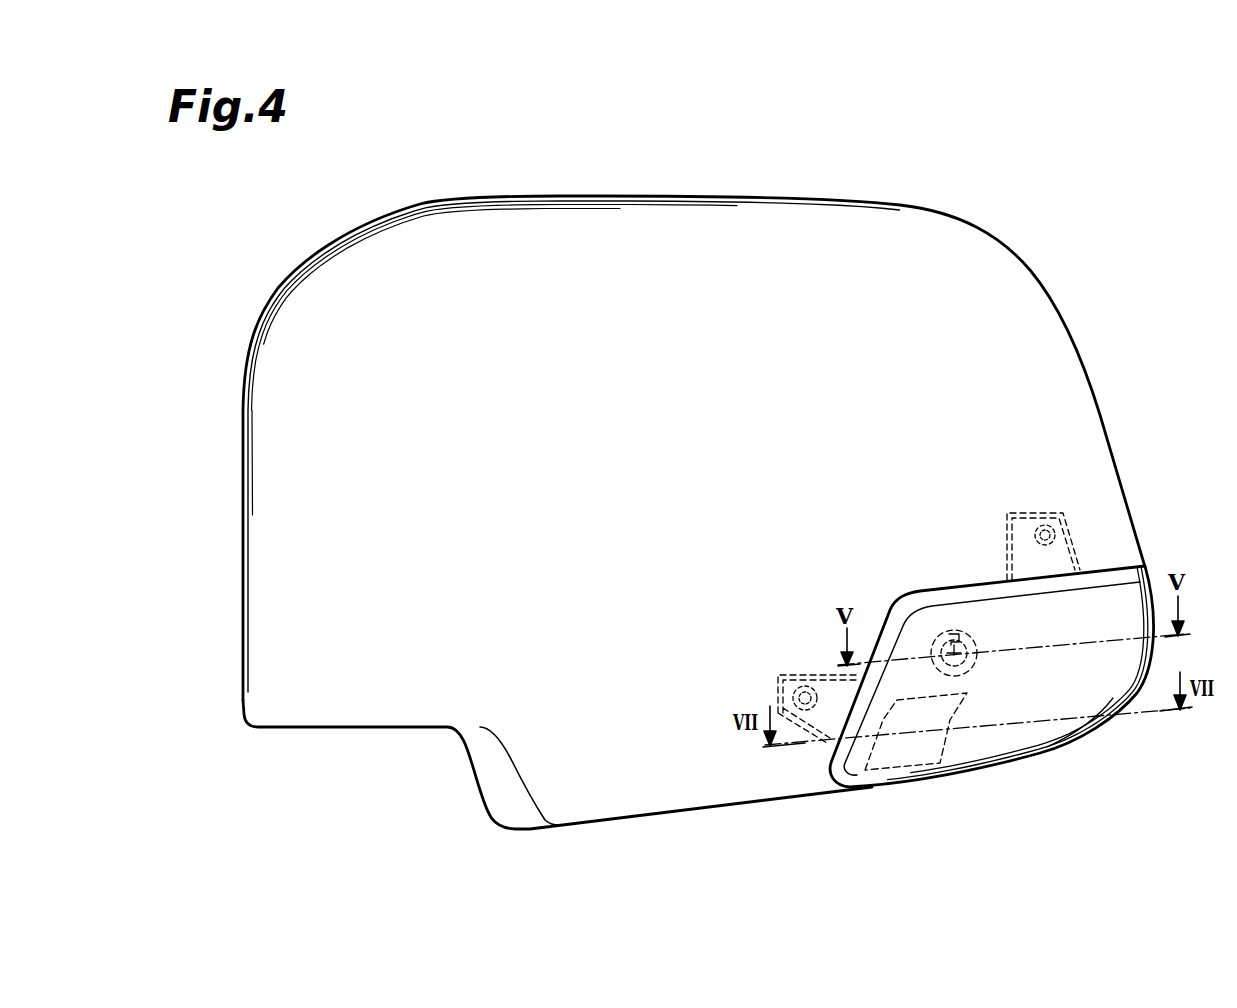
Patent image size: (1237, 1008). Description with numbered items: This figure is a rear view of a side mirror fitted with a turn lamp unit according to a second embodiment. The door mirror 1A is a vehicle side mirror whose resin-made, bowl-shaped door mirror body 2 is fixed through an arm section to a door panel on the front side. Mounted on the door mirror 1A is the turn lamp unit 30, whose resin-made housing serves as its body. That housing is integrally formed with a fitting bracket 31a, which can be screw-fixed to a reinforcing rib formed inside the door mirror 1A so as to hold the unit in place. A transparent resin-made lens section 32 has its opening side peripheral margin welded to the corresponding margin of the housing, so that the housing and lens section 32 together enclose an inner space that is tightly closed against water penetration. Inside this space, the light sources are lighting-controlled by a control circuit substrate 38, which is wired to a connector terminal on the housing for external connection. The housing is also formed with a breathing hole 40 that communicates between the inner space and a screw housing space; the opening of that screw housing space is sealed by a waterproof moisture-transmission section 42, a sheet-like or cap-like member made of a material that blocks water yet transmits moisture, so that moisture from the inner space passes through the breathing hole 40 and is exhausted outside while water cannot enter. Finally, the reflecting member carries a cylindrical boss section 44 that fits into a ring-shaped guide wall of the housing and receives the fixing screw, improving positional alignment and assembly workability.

The door mirror 1A is at (1054, 208).
The door mirror body 2 is at (1060, 357).
The turn lamp unit 30 is at (966, 675).
The fitting bracket 31a is at (1060, 557).
The lens section 32 is at (993, 742).
The control circuit substrate 38 is at (890, 772).
The breathing hole 40 is at (955, 635).
The waterproof moisture-transmission section 42 is at (977, 658).
The boss section 44 is at (977, 645).